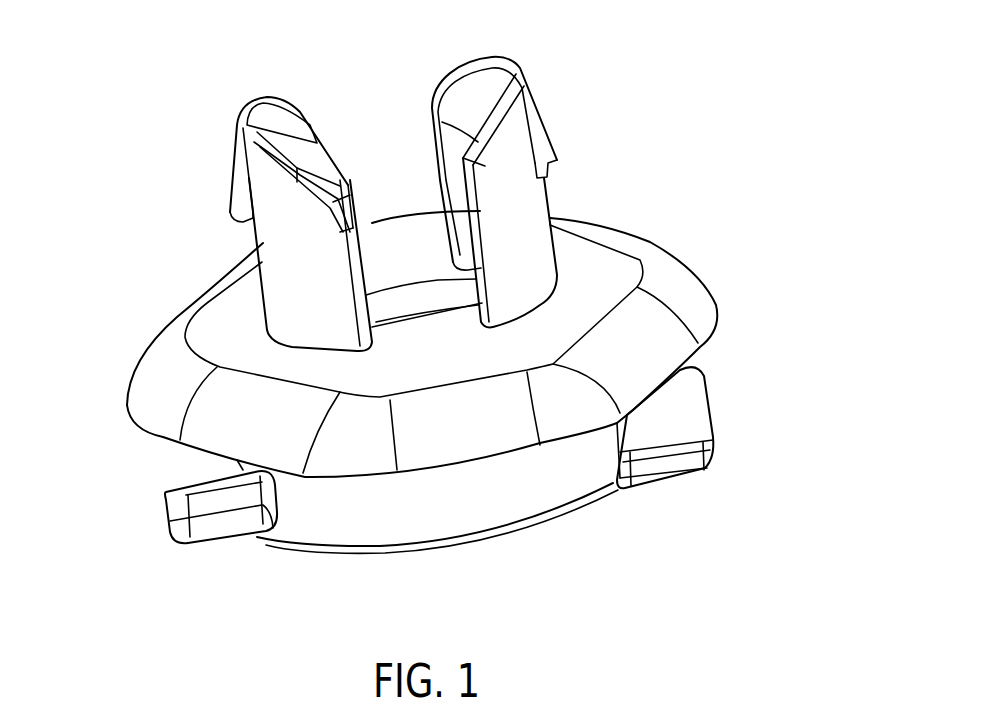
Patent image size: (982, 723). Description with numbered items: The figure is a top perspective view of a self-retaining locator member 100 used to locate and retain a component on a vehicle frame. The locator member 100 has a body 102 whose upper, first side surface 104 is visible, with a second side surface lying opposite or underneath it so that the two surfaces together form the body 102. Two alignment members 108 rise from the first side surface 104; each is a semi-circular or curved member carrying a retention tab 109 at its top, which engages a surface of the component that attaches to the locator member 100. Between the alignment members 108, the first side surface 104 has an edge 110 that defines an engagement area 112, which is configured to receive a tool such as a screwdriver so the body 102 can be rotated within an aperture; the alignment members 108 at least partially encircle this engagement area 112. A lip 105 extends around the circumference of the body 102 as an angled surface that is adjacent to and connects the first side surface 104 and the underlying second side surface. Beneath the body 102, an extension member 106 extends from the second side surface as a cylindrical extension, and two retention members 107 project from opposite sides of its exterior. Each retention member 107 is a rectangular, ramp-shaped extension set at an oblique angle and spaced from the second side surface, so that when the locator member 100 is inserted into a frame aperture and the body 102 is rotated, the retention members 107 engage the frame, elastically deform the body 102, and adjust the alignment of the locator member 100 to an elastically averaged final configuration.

The self-retaining locator member 100 is at (174, 89).
The body 102 is at (228, 277).
The first side surface 104 is at (573, 284).
The lip 105 is at (580, 410).
The extension member 106 is at (333, 533).
The retention member 107 is at (160, 513).
The alignment member 108 is at (300, 272).
The retention tab 109 is at (240, 190).
The edge 110 is at (436, 297).
The engagement area 112 is at (406, 302).